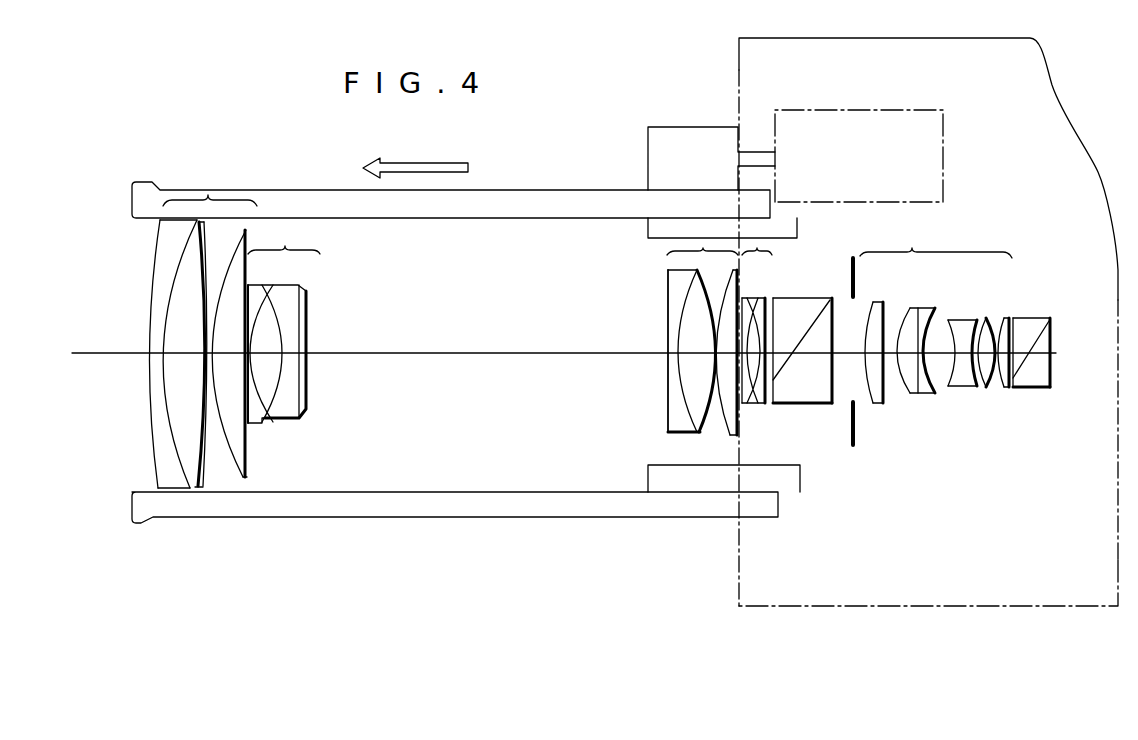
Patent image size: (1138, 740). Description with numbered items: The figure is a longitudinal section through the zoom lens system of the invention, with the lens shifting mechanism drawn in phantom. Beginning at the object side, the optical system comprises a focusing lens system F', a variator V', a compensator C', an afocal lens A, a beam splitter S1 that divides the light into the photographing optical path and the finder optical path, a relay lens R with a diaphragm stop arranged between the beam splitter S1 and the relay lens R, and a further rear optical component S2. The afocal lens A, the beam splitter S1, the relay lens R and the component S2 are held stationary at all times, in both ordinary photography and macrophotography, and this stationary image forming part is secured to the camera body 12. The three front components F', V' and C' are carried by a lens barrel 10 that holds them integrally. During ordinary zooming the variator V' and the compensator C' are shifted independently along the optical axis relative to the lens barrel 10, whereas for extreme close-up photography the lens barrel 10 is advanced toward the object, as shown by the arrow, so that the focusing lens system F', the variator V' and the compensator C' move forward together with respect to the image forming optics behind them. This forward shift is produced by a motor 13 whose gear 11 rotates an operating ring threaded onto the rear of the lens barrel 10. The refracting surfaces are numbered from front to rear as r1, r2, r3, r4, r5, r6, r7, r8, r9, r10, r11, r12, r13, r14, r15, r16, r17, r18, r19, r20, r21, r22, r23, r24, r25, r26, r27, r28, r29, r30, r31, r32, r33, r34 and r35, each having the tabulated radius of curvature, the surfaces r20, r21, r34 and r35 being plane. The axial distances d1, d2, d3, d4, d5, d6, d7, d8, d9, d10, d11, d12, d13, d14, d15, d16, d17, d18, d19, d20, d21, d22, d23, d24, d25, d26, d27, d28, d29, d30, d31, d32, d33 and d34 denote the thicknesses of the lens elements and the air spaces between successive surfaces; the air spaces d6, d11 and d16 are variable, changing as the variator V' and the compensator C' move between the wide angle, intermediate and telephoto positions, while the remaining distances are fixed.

The lens barrel 10 is at (536, 198).
The gear 11 is at (680, 127).
The camera body 12 is at (737, 64).
The motor 13 is at (838, 110).
The focusing lens system F' is at (210, 182).
The variator V' is at (284, 238).
The compensator C' is at (702, 226).
The afocal lens A is at (757, 248).
The relay lens R is at (914, 250).
The beam splitter S1 is at (852, 260).
The rear stationary optical component S2 is at (1050, 318).
The lens thickness or air space d1 is at (152, 326).
The lens thickness or air space d2 is at (168, 332).
The lens thickness or air space d3 is at (176, 350).
The lens thickness or air space d4 is at (202, 354).
The lens thickness or air space d5 is at (216, 354).
The variable air space d6 is at (240, 352).
The lens thickness or air space d7 is at (245, 350).
The lens thickness or air space d8 is at (283, 350).
The lens thickness or air space d9 is at (284, 352).
The lens thickness or air space d10 is at (300, 354).
The variable air space d11 is at (473, 352).
The lens thickness or air space d12 is at (672, 348).
The lens thickness or air space d13 is at (692, 354).
The lens thickness or air space d14 is at (713, 348).
The lens thickness or air space d15 is at (733, 288).
The variable air space d16 is at (752, 297).
The lens thickness or air space d17 is at (767, 303).
The lens thickness or air space d18 is at (767, 330).
The lens thickness or air space d19 is at (767, 351).
The lens thickness or air space d20 is at (823, 300).
The lens thickness or air space d21 is at (845, 350).
The lens thickness or air space d22 is at (873, 300).
The lens thickness or air space d23 is at (873, 302).
The lens thickness or air space d24 is at (910, 308).
The lens thickness or air space d25 is at (918, 308).
The lens thickness or air space d26 is at (937, 310).
The lens thickness or air space d27 is at (953, 320).
The lens thickness or air space d28 is at (965, 322).
The lens thickness or air space d29 is at (983, 317).
The lens thickness or air space d30 is at (992, 318).
The lens thickness or air space d31 is at (1007, 318).
The lens thickness or air space d32 is at (1012, 322).
The lens thickness or air space d33 is at (1040, 326).
The lens thickness or air space d34 is at (1046, 342).
The radius of curvature of first surface r1 is at (153, 448).
The radius of curvature of second surface r2 is at (182, 470).
The radius of curvature of third surface r3 is at (195, 485).
The radius of curvature of fourth surface r4 is at (202, 487).
The radius of curvature of fifth surface r5 is at (233, 470).
The radius of curvature of sixth surface r6 is at (245, 479).
The radius of curvature of seventh surface r7 is at (252, 423).
The radius of curvature of eighth surface r8 is at (266, 428).
The radius of curvature of ninth surface r9 is at (282, 424).
The radius of curvature of tenth surface r10 is at (300, 420).
The radius of curvature of eleventh surface r11 is at (312, 406).
The radius of curvature of twelfth surface r12 is at (668, 403).
The radius of curvature of thirteenth surface r13 is at (697, 420).
The radius of curvature of fourteenth surface r14 is at (682, 437).
The radius of curvature of fifteenth surface r15 is at (725, 427).
The radius of curvature of sixteenth surface r16 is at (740, 430).
The radius of curvature of seventeenth surface r17 is at (745, 402).
The radius of curvature of eighteenth surface r18 is at (760, 407).
The radius of curvature of nineteenth surface r19 is at (773, 392).
The radius of curvature of twentieth surface r20 is at (800, 402).
The radius of curvature of twenty-first surface r21 is at (833, 402).
The radius of curvature of twenty-second surface r22 is at (867, 405).
The radius of curvature of twenty-third surface r23 is at (883, 405).
The radius of curvature of twenty-fourth surface r24 is at (902, 395).
The radius of curvature of twenty-fifth surface r25 is at (918, 395).
The radius of curvature of twenty-sixth surface r26 is at (935, 395).
The radius of curvature of twenty-seventh surface r27 is at (955, 388).
The radius of curvature of twenty-eighth surface r28 is at (975, 388).
The radius of curvature of twenty-ninth surface r29 is at (985, 389).
The radius of curvature of thirtieth surface r30 is at (997, 389).
The radius of curvature of thirty-first surface r31 is at (1007, 389).
The radius of curvature of thirty-second surface r32 is at (1012, 389).
The radius of curvature of thirty-third surface r33 is at (1014, 383).
The radius of curvature of thirty-fourth surface r34 is at (1033, 386).
The radius of curvature of thirty-fifth surface r35 is at (1050, 378).